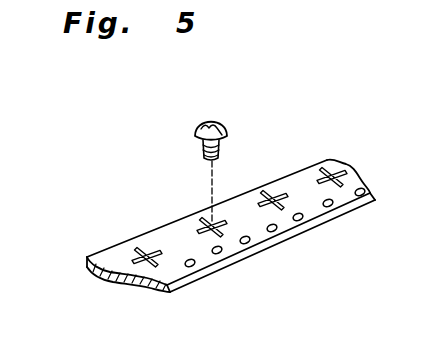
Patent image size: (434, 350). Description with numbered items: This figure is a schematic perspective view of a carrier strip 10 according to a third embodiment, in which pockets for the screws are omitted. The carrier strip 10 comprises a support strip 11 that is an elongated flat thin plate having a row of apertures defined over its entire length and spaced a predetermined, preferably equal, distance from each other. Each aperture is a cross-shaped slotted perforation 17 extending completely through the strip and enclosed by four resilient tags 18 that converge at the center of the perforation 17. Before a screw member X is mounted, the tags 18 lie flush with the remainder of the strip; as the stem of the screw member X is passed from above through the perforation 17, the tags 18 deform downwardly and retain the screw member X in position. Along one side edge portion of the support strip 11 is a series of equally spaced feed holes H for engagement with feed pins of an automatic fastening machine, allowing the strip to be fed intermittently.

The carrier strip 10 is at (233, 268).
The support strip 11 is at (165, 272).
The cross-shaped slotted perforation 17 is at (132, 258).
The resilient tags 18 is at (146, 253).
The feed holes H is at (303, 219).
The screw member X is at (225, 130).